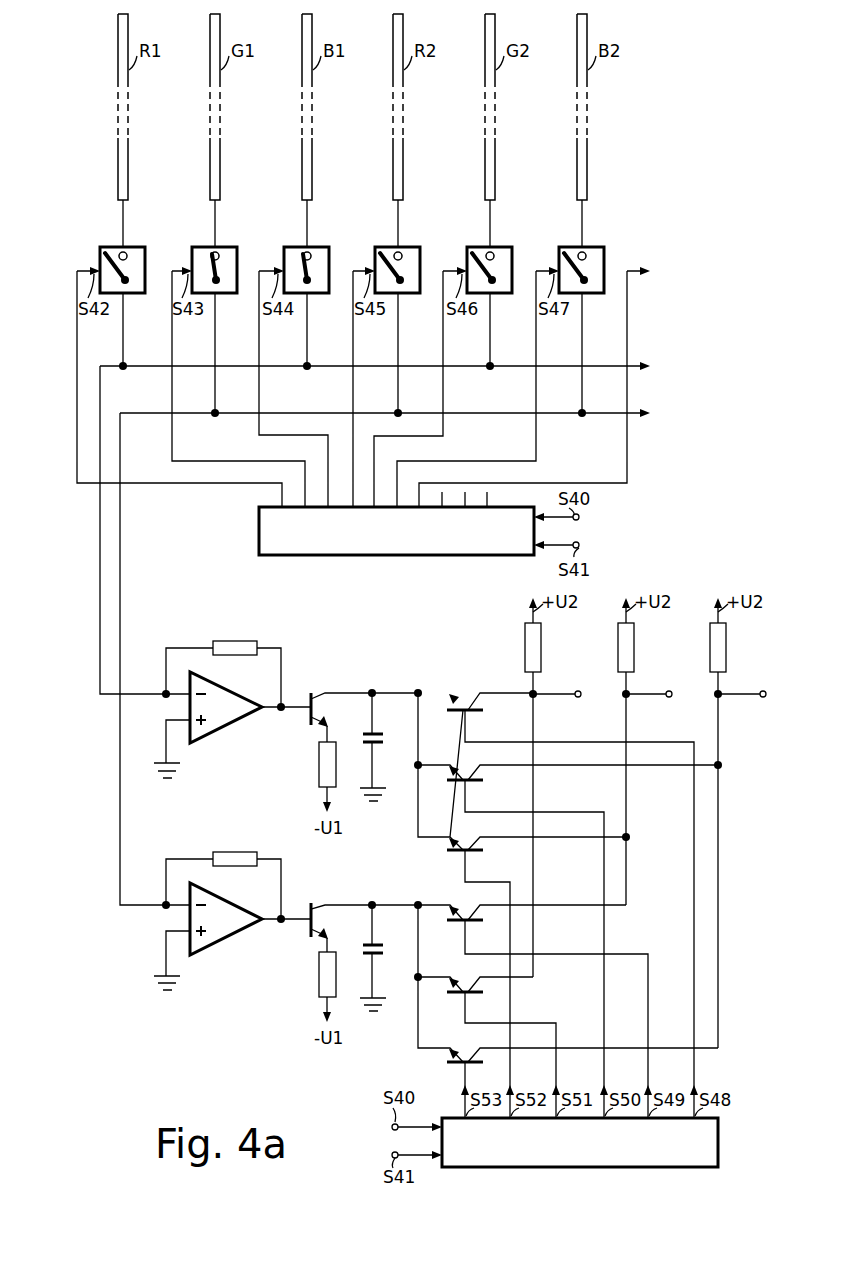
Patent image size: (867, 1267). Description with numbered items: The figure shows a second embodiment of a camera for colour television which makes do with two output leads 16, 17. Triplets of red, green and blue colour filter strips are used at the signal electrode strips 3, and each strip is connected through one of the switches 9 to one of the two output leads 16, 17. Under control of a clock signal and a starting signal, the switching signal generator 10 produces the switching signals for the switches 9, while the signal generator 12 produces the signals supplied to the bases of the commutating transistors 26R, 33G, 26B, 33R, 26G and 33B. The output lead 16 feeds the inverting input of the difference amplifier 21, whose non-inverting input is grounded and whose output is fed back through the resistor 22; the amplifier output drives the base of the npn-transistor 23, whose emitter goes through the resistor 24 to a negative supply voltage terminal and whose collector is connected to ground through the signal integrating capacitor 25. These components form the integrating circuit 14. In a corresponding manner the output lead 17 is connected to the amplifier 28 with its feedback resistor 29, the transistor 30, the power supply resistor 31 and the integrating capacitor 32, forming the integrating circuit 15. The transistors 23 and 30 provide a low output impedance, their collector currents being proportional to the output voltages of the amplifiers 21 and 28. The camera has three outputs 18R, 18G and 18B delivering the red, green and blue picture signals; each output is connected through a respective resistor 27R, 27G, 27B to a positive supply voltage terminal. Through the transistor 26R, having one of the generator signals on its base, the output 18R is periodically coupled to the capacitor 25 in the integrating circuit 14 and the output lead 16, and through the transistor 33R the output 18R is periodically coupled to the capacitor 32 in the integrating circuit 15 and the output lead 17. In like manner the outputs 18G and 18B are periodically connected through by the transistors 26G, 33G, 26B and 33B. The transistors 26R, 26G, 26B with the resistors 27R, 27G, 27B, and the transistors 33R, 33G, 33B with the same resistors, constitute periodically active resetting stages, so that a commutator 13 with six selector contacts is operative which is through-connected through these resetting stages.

The signal electrode strips 3 is at (598, 156).
The switches 9 is at (562, 246).
The switching signal generator 10 is at (259, 530).
The signal generator 12 is at (583, 1167).
The commutator 13 is at (434, 883).
The integrating circuit 14 is at (357, 724).
The integrating circuit 15 is at (357, 936).
The output lead 16 is at (270, 367).
The output lead 17 is at (460, 412).
The output 18R is at (577, 691).
The output 18G is at (669, 691).
The output 18B is at (763, 691).
The difference amplifier 21 is at (231, 728).
The resistor 22 is at (240, 641).
The npn-transistor 23 is at (309, 696).
The resistor 24 is at (319, 765).
The signal integrating capacitor 25 is at (381, 737).
The transistor 26R is at (478, 711).
The transistor 26G is at (478, 853).
The transistor 26B is at (478, 783).
The resistor 27R is at (525, 649).
The resistor 27G is at (618, 649).
The resistor 27B is at (710, 653).
The amplifier 28 is at (231, 940).
The feedback resistor 29 is at (240, 852).
The transistor 30 is at (309, 904).
The power supply resistor 31 is at (319, 974).
The integrating capacitor 32 is at (381, 947).
The transistor 33R is at (467, 995).
The transistor 33G is at (467, 922).
The transistor 33B is at (467, 1065).